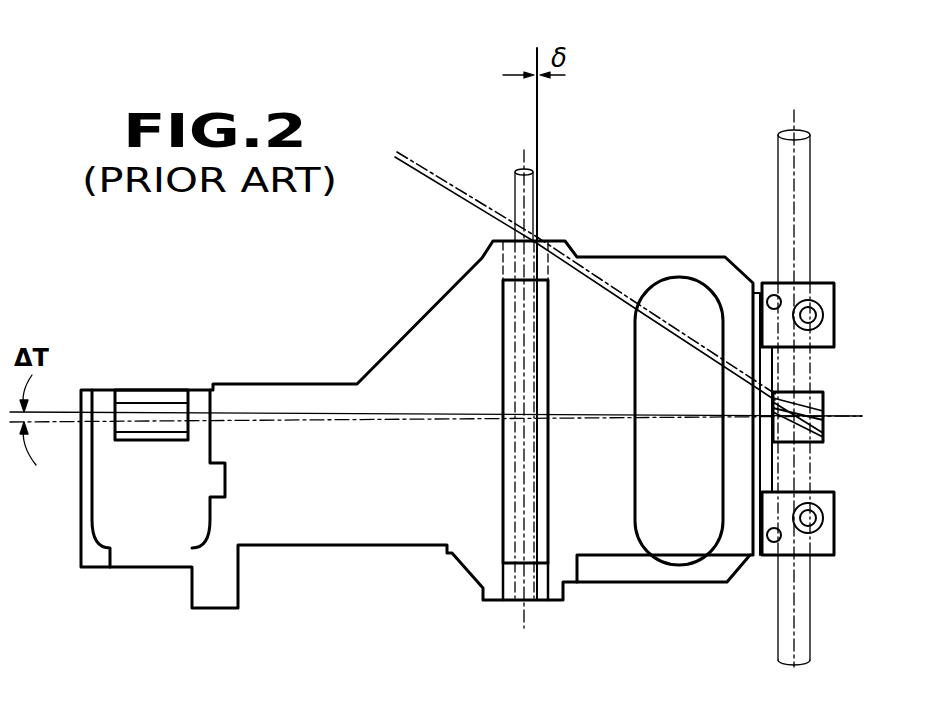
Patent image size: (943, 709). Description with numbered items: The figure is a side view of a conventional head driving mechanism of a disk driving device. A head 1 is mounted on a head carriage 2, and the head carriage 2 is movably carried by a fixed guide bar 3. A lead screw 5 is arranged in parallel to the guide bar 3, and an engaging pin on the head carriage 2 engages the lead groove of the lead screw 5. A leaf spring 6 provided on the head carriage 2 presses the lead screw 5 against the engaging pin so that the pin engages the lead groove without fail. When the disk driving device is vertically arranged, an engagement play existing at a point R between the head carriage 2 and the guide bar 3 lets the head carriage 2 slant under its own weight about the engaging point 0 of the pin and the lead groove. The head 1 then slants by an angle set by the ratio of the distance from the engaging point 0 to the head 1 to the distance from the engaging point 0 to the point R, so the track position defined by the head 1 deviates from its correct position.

The head 1 is at (150, 405).
The head carriage 2 is at (273, 440).
The guide bar 3 is at (515, 195).
The lead screw 5 is at (778, 190).
The leaf spring 6 is at (827, 437).
The engaging point 0 is at (800, 393).
The point R is at (537, 240).